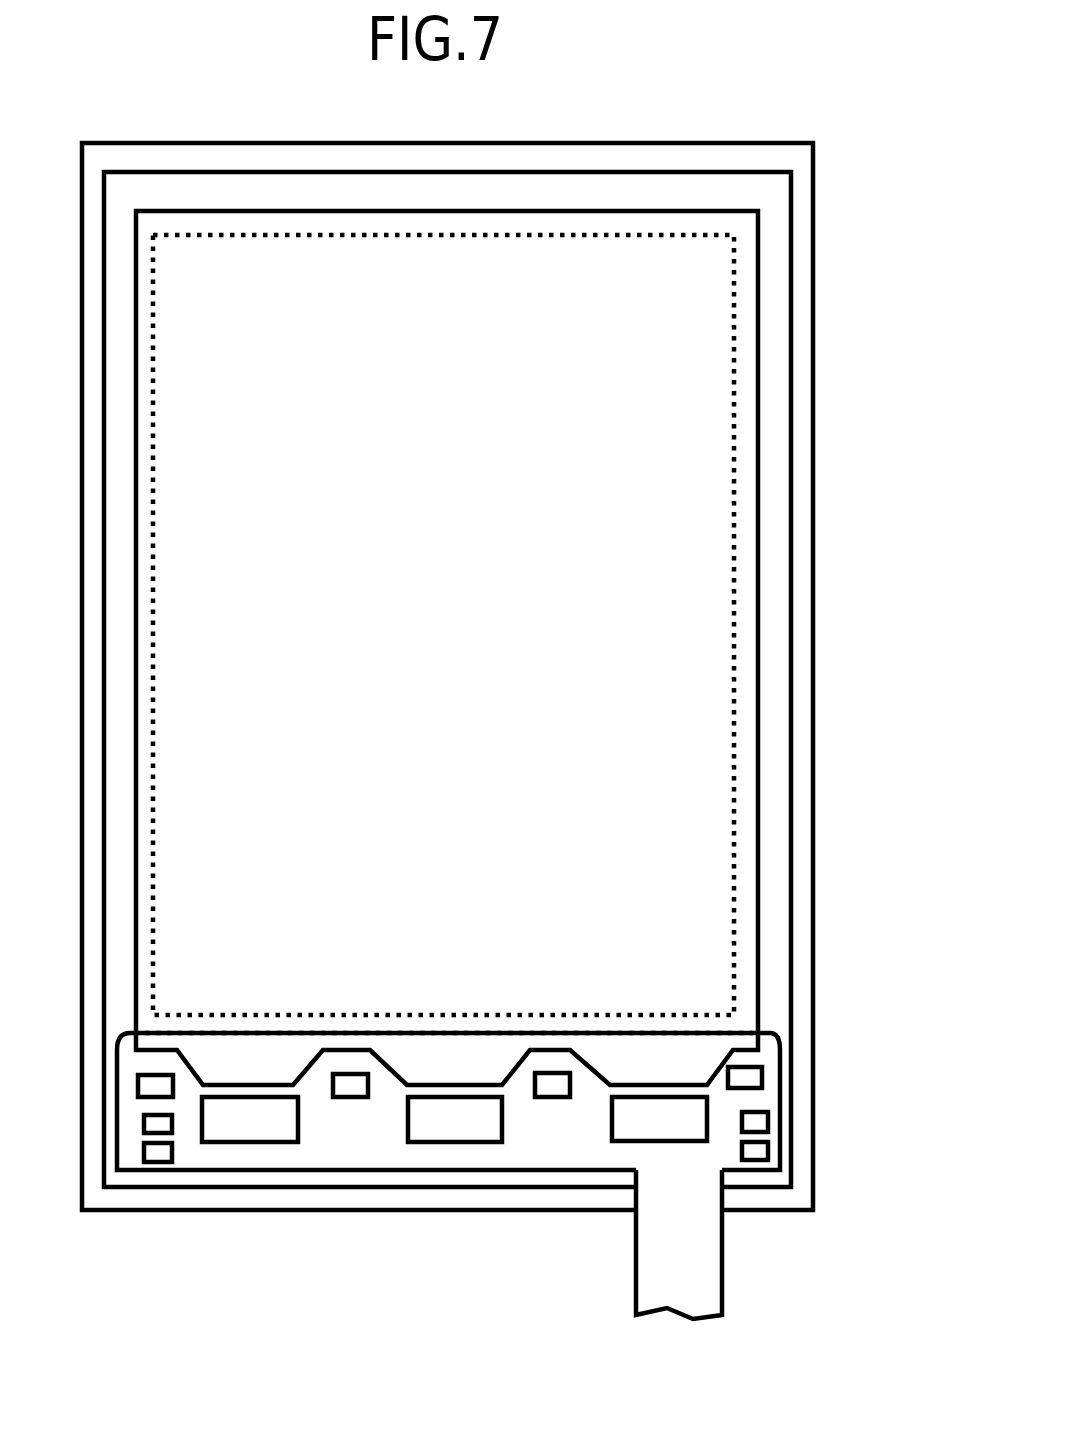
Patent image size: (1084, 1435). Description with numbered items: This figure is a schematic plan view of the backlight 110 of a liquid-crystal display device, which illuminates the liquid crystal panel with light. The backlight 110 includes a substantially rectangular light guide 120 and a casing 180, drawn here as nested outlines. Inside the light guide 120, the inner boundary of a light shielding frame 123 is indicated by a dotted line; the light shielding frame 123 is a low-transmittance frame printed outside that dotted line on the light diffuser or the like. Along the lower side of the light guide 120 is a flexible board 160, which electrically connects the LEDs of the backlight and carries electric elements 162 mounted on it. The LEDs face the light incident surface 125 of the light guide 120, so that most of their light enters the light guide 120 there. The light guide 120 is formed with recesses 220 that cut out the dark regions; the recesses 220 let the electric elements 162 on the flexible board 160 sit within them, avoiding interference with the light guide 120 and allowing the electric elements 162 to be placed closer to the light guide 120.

The backlight 110 is at (445, 1224).
The light guide 120 is at (758, 472).
The light shielding frame 123 is at (734, 363).
The light incident surface 125 is at (477, 1085).
The flexible board 160 is at (348, 1147).
The electric elements 162 is at (161, 1162).
The casing 180 is at (550, 1212).
The recesses 220 is at (385, 1052).